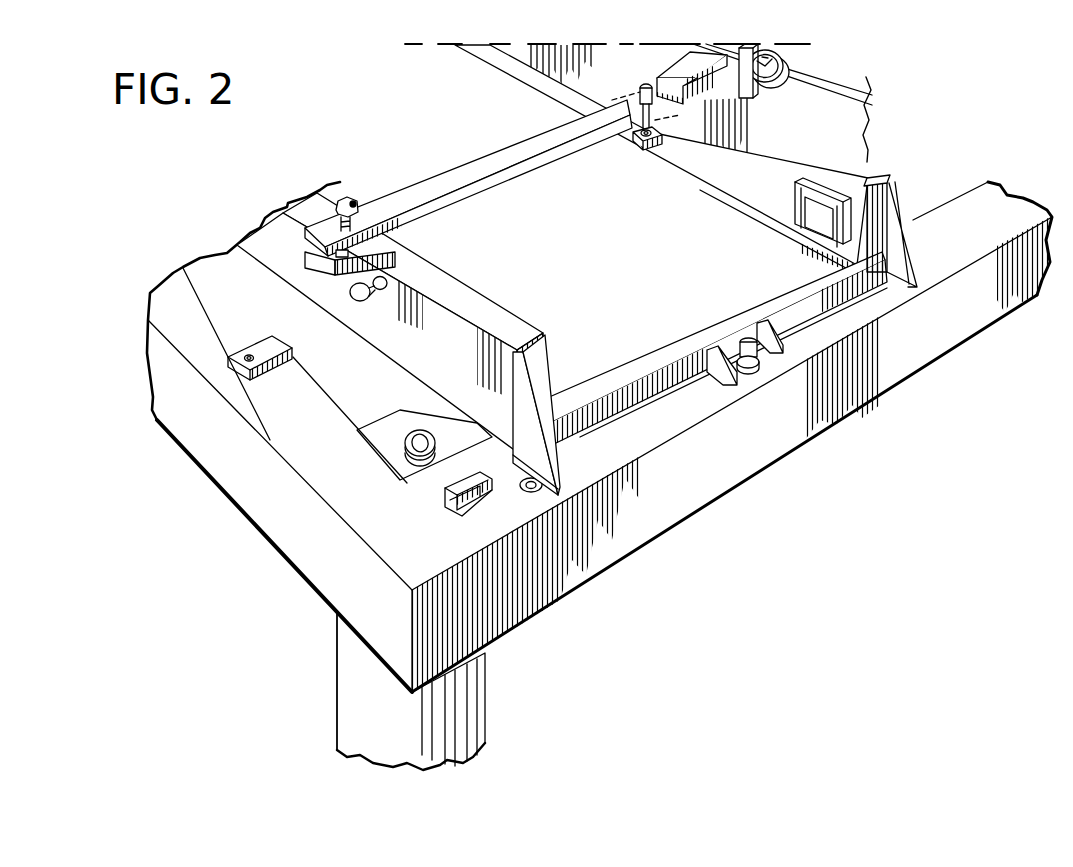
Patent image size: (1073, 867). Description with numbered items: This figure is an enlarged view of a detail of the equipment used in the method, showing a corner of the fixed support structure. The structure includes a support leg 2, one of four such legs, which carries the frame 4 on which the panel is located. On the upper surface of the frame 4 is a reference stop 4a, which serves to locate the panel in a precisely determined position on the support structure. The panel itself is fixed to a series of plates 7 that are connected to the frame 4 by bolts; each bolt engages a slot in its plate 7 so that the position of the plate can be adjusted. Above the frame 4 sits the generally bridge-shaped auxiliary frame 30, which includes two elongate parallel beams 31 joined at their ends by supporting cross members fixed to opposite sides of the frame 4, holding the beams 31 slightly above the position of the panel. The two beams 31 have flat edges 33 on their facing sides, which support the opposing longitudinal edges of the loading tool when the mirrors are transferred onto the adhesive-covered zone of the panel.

The support leg 2 is at (356, 718).
The frame 4 is at (548, 610).
The reference stop 4a is at (490, 497).
The plate 7 is at (277, 338).
The auxiliary frame 30 is at (611, 269).
The beam 31 is at (508, 298).
The flat edge 33 is at (555, 402).